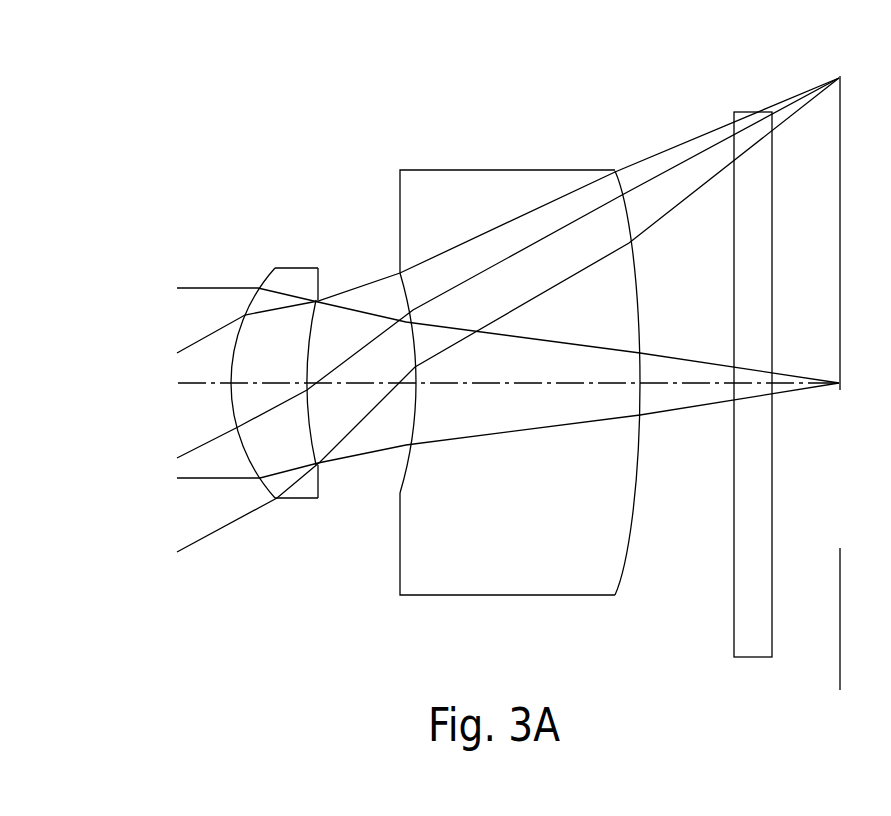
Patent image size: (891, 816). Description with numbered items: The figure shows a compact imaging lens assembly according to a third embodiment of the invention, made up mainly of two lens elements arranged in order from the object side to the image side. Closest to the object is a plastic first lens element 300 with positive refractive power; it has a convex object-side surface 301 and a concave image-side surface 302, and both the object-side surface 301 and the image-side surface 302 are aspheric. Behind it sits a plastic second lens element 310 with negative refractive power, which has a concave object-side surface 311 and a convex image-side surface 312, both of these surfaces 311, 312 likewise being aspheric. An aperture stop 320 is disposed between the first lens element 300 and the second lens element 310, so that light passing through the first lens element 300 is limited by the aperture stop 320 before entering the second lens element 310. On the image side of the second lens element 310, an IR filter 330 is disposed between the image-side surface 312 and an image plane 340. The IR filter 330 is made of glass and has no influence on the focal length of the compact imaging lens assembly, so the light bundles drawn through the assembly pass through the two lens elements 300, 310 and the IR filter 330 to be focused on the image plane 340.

The first lens element 300 is at (209, 386).
The object-side surface 301 is at (230, 400).
The image-side surface 302 is at (307, 400).
The second lens element 310 is at (479, 361).
The object-side surface 311 is at (413, 403).
The image-side surface 312 is at (637, 410).
The aperture stop 320 is at (320, 302).
The IR filter 330 is at (755, 170).
The image plane 340 is at (838, 140).